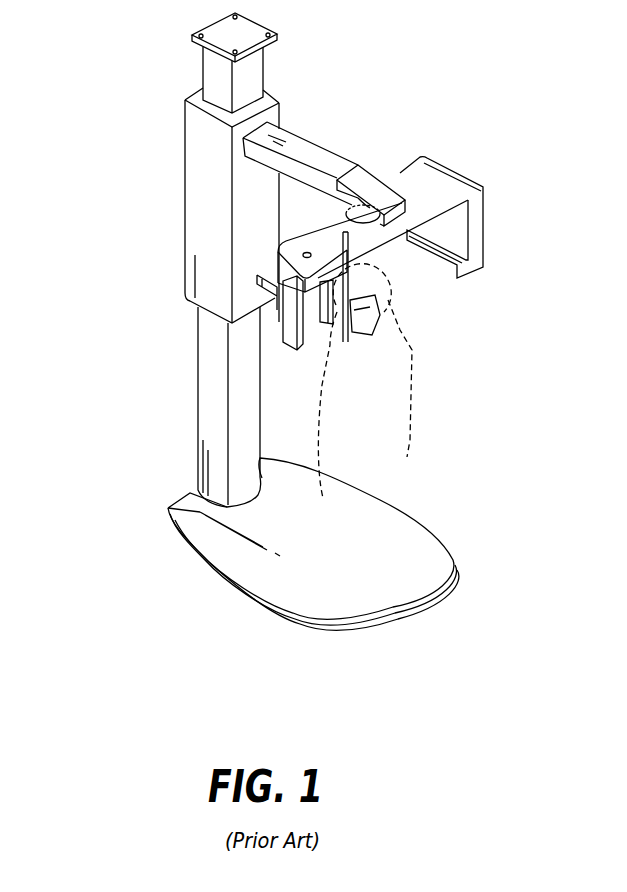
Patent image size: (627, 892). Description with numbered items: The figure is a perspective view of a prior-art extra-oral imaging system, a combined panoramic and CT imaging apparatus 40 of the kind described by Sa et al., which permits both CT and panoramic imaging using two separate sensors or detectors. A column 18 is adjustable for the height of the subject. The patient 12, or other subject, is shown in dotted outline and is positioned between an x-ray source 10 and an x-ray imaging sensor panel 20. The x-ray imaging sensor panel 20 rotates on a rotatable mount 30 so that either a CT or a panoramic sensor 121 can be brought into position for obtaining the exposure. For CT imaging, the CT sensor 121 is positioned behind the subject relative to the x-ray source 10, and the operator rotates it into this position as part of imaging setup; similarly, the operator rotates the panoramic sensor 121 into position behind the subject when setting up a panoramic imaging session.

The x-ray source 10 is at (485, 227).
The patient 12 is at (418, 388).
The column 18 is at (198, 385).
The x-ray imaging sensor panel 20 is at (282, 287).
The rotatable mount 30 is at (388, 182).
The combined panoramic and CT imaging apparatus 40 is at (265, 72).
The CT or panoramic sensor 121 is at (308, 320).